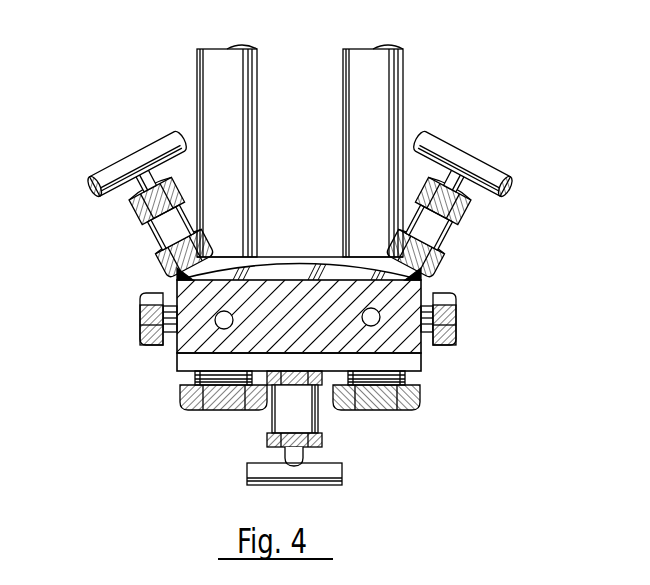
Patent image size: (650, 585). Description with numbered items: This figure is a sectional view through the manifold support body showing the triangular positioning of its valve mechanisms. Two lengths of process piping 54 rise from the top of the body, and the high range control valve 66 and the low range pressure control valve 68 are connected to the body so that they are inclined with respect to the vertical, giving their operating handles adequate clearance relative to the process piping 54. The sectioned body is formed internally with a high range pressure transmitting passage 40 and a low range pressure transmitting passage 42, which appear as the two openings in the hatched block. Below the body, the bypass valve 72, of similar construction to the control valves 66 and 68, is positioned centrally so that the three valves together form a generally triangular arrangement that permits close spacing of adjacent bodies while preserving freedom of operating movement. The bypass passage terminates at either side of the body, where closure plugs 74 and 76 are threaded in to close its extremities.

The process piping 54 is at (215, 68).
The high range control valve 66 is at (168, 242).
The low range pressure control valve 68 is at (438, 210).
The closure plug 74 is at (141, 317).
The closure plug 76 is at (457, 330).
The high range pressure transmitting passage 40 is at (217, 325).
The low range pressure transmitting passage 42 is at (378, 322).
The bypass valve 72 is at (288, 415).